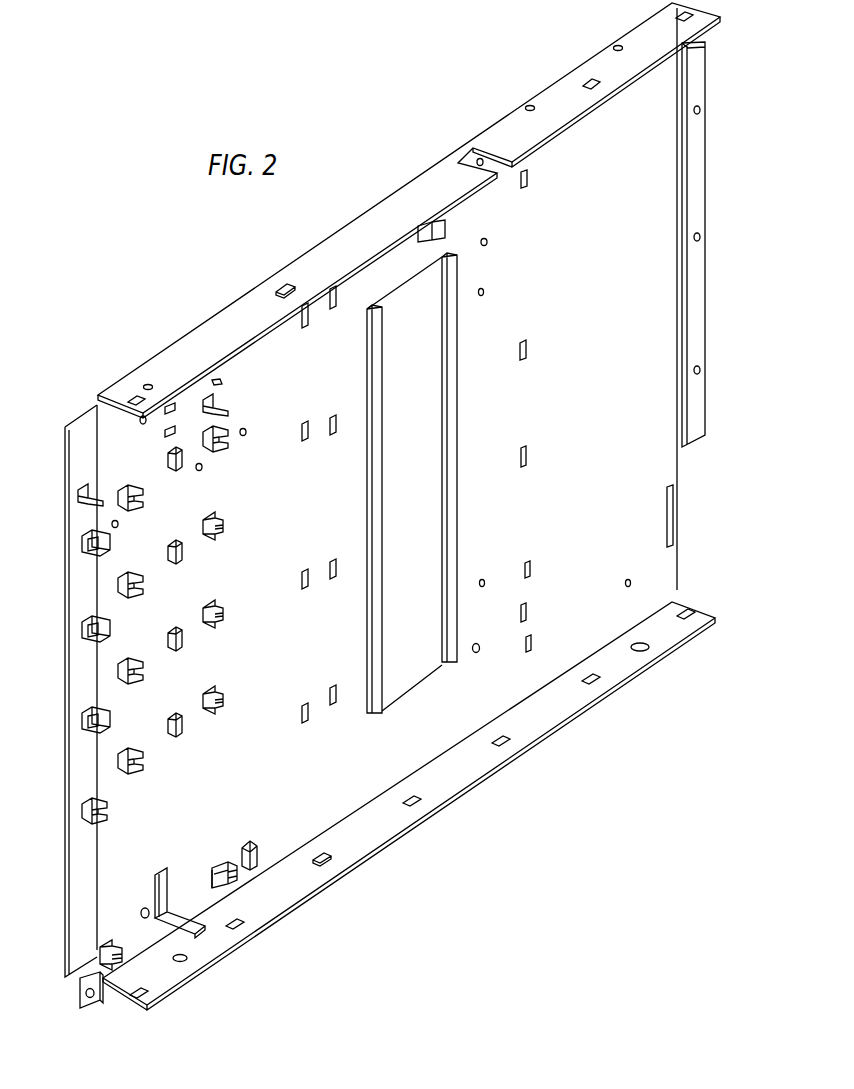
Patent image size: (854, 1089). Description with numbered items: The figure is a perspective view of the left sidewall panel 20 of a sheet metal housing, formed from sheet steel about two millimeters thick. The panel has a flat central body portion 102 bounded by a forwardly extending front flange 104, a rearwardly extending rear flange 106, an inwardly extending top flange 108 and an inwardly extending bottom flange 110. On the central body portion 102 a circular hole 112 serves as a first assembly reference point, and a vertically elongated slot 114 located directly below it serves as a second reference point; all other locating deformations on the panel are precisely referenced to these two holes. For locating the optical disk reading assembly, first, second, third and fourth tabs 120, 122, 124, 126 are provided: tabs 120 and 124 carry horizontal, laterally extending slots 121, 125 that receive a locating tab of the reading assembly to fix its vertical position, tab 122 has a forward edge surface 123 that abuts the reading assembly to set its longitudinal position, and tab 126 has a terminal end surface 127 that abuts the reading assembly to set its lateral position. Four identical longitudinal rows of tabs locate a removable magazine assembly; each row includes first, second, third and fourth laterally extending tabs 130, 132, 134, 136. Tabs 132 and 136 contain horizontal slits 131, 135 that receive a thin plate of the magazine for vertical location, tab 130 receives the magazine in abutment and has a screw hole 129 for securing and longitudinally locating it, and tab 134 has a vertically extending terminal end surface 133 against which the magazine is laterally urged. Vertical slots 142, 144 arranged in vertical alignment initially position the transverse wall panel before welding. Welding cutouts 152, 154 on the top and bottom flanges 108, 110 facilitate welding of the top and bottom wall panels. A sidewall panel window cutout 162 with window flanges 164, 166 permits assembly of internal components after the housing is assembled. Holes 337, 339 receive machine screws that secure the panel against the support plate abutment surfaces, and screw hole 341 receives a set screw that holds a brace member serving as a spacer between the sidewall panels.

The left sidewall panel 20 is at (272, 592).
The flat central body portion 102 is at (110, 418).
The front flange 104 is at (85, 585).
The rear flange 106 is at (700, 190).
The top flange 108 is at (222, 332).
The bottom flange 110 is at (555, 718).
The circular hole 112 is at (487, 247).
The slot 114 is at (476, 644).
The first tab 120 is at (110, 985).
The slot 121 is at (120, 965).
The second tab 122 is at (207, 922).
The forward edge surface 123 is at (195, 932).
The third tab 124 is at (222, 885).
The slot 125 is at (240, 878).
The fourth tab 126 is at (253, 851).
The terminal end surface 127 is at (260, 863).
The screw hole 129 is at (93, 643).
The first laterally extending tab 130 is at (88, 637).
The slit 131 is at (140, 582).
The second laterally extending tab 132 is at (129, 603).
The terminal end surface 133 is at (184, 556).
The third laterally extending tab 134 is at (173, 542).
The slit 135 is at (222, 530).
The fourth laterally extending tab 136 is at (200, 520).
The vertical slot 142 is at (528, 178).
The vertical slot 144 is at (527, 347).
The welding cutout 152 is at (284, 286).
The welding cutout 154 is at (333, 855).
The sidewall panel window cutout 162 is at (412, 290).
The window flange 164 is at (370, 575).
The window flange 166 is at (450, 532).
The hole 337 is at (202, 466).
The hole 339 is at (244, 429).
The screw hole 341 is at (112, 525).